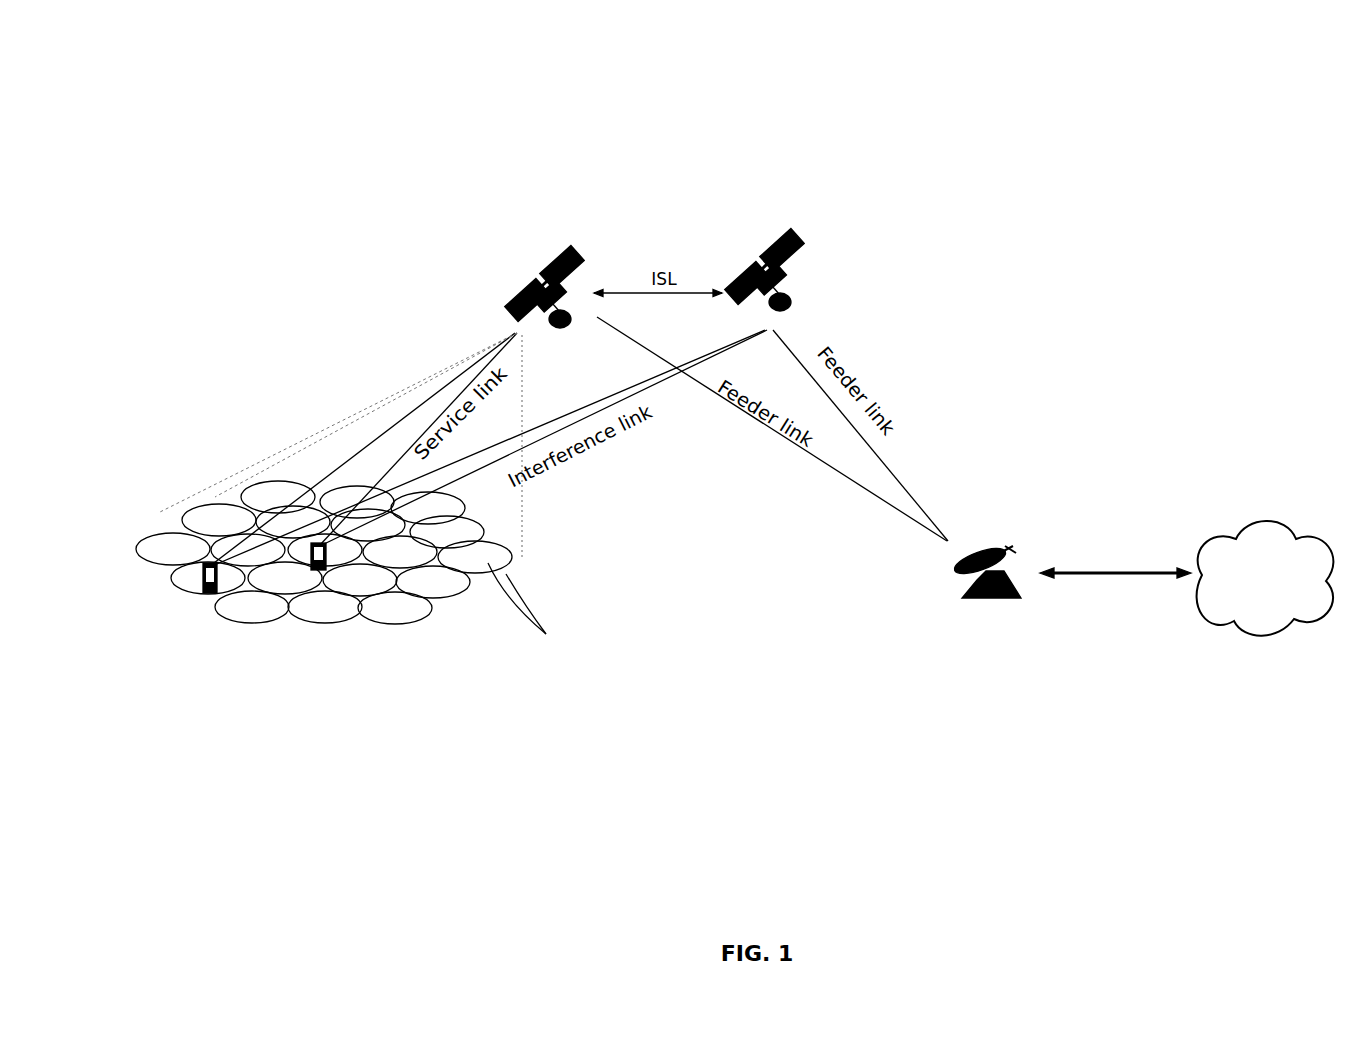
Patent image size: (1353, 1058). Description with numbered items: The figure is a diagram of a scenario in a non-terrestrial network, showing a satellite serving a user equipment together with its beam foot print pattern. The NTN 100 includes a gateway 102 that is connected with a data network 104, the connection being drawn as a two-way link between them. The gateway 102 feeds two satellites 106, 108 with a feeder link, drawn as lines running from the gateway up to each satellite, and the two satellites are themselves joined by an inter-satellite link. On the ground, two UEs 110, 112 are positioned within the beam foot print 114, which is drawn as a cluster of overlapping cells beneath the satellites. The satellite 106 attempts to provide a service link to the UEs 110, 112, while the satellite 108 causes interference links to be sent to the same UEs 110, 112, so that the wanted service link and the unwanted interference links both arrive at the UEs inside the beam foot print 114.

The NTN 100 is at (199, 89).
The gateway 102 is at (988, 608).
The data network 104 is at (1265, 578).
The satellite 106 is at (565, 272).
The satellite 108 is at (788, 260).
The UE 110 is at (204, 612).
The UE 112 is at (323, 594).
The beam foot print 114 is at (376, 585).